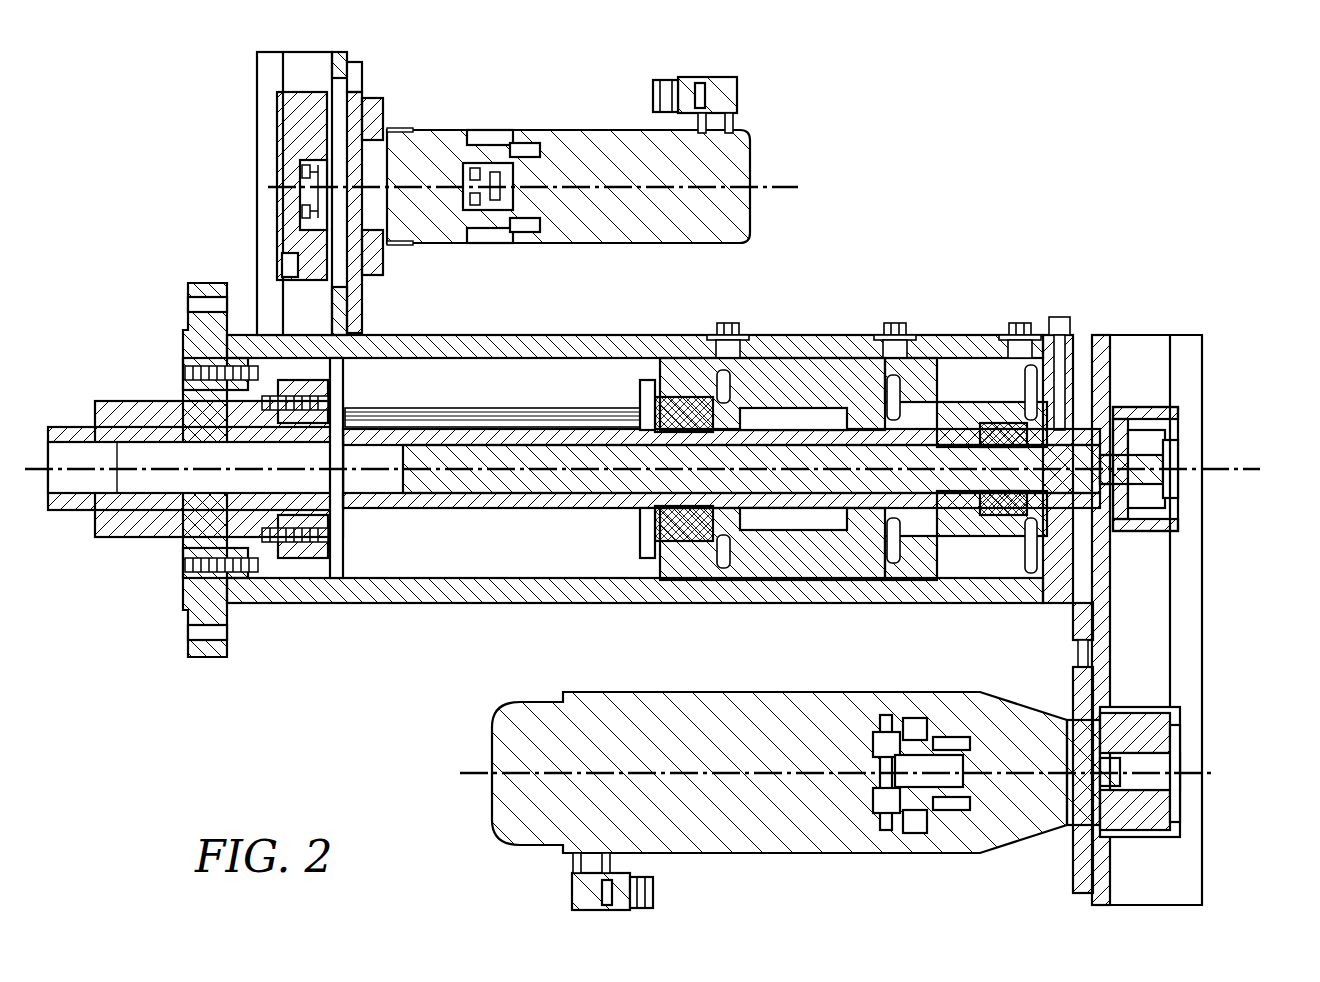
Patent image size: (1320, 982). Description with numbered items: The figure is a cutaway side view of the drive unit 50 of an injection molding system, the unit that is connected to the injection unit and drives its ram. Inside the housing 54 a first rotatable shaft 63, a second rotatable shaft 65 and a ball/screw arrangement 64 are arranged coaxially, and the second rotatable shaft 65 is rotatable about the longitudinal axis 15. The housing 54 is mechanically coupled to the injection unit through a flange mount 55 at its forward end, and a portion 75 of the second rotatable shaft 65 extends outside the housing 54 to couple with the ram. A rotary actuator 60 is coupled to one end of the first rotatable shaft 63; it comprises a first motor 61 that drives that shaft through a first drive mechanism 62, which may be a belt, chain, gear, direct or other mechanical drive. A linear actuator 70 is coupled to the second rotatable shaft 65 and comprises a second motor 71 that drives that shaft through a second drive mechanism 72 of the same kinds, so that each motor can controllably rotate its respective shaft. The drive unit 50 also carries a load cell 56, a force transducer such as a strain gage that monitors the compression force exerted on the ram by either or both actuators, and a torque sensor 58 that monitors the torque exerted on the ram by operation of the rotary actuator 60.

The longitudinal axis 15 is at (1223, 472).
The drive unit 50 is at (669, 543).
The housing 54 is at (546, 578).
The flange mount 55 is at (196, 597).
The load cell 56 is at (1108, 395).
The torque sensor 58 is at (281, 266).
The rotary actuator 60 is at (836, 821).
The first motor 61 is at (833, 855).
The first drive mechanism 62 is at (1186, 640).
The first rotatable shaft 63 is at (1113, 452).
The ball/screw arrangement 64 is at (843, 360).
The second rotatable shaft 65 is at (396, 432).
The linear actuator 70 is at (519, 183).
The second motor 71 is at (598, 130).
The second drive mechanism 72 is at (285, 212).
The portion of the second rotatable shaft 75 is at (76, 455).